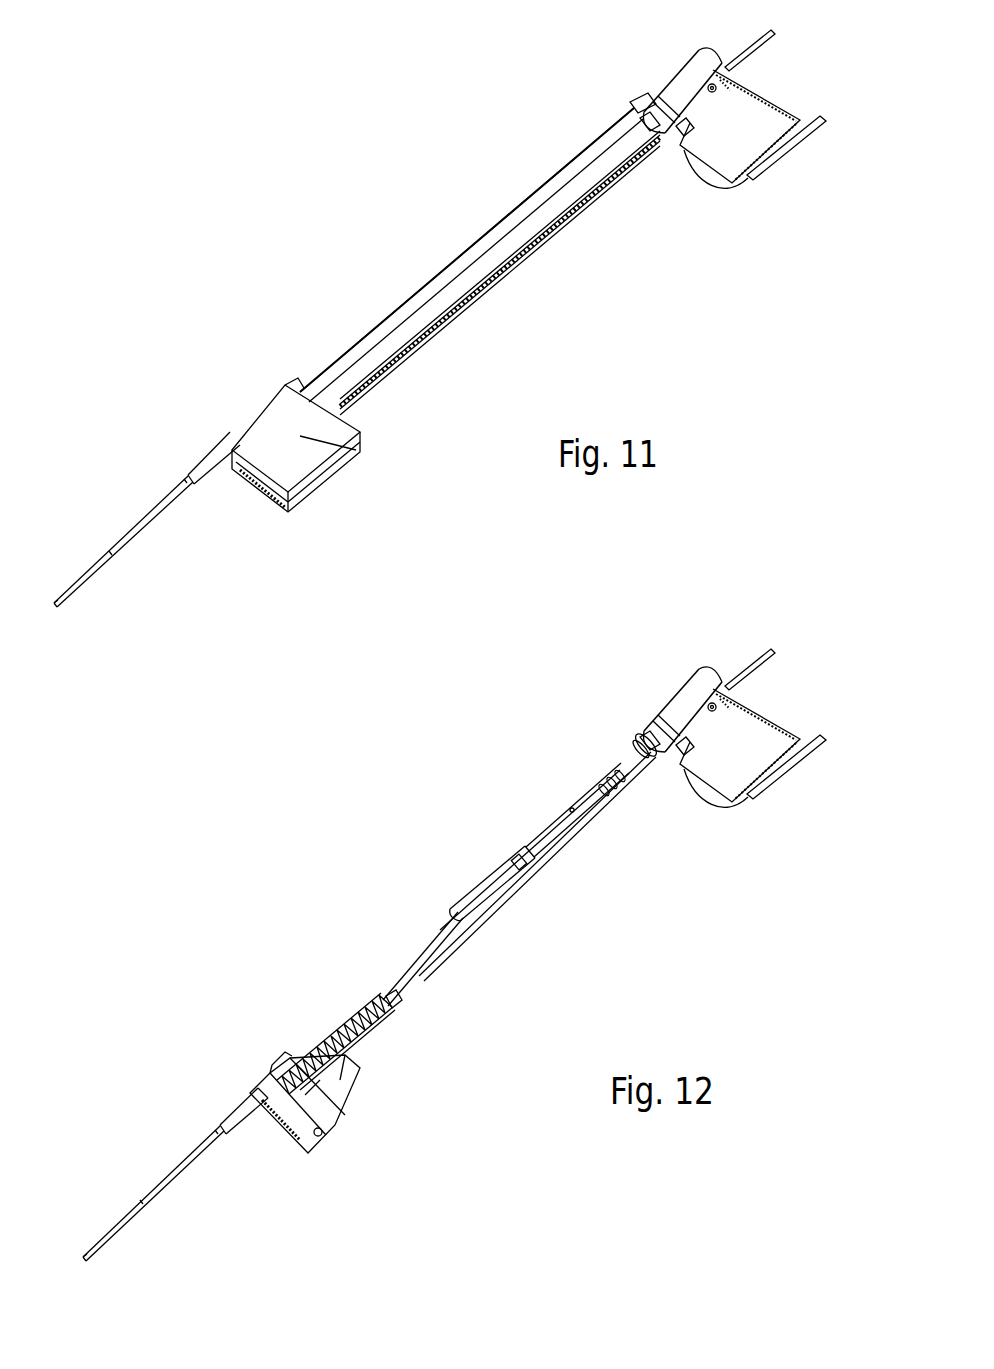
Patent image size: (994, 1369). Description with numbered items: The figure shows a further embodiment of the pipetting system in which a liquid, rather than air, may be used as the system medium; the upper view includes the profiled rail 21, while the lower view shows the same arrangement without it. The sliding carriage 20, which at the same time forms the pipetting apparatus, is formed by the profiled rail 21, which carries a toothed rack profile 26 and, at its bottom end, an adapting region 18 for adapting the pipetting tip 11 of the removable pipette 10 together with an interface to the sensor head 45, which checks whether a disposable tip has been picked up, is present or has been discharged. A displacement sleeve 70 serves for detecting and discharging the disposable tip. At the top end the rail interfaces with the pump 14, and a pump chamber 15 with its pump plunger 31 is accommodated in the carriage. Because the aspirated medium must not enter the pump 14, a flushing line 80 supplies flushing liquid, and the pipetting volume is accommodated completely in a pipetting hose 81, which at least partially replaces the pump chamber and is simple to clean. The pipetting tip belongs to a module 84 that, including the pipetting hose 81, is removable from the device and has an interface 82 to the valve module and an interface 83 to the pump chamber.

In FIG. 11, the pipette 10 is at (110, 542).
In FIG. 12, the pipette 10 is at (140, 1198).
In FIG. 11, the pipetting tip 11 is at (53, 604).
In FIG. 12, the pipetting tip 11 is at (86, 1260).
In FIG. 11, the pump 14 is at (688, 66).
In FIG. 12, the pump 14 is at (688, 695).
In FIG. 12, the pump chamber 15 is at (440, 943).
In FIG. 11, the adapting region 18 is at (272, 402).
In FIG. 11, the sliding carriage 20 is at (416, 254).
In FIG. 12, the sliding carriage 20 is at (410, 886).
In FIG. 11, the profiled rail 21 is at (523, 196).
In FIG. 11, the toothed rack profile 26 is at (515, 264).
In FIG. 12, the pump plunger 31 is at (515, 900).
In FIG. 11, the sensor head 45 is at (340, 432).
In FIG. 11, the displacement sleeve 70 is at (192, 474).
In FIG. 12, the displacement sleeve 70 is at (230, 1115).
In FIG. 11, the flushing line 80 is at (768, 36).
In FIG. 12, the flushing line 80 is at (750, 666).
In FIG. 12, the pipetting hose 81 is at (357, 1012).
In FIG. 12, the interface to the valve module 82 is at (325, 1140).
In FIG. 12, the interface to the pump chamber 83 is at (393, 1015).
In FIG. 12, the module 84 is at (314, 1036).